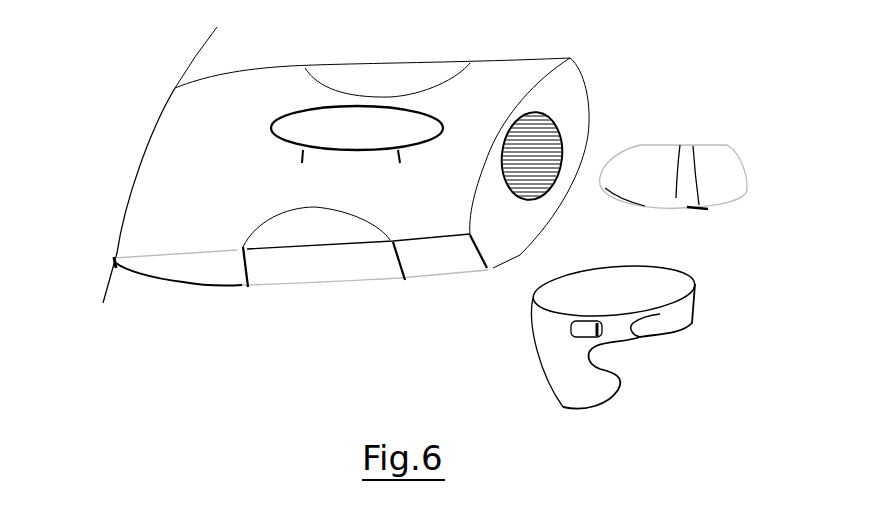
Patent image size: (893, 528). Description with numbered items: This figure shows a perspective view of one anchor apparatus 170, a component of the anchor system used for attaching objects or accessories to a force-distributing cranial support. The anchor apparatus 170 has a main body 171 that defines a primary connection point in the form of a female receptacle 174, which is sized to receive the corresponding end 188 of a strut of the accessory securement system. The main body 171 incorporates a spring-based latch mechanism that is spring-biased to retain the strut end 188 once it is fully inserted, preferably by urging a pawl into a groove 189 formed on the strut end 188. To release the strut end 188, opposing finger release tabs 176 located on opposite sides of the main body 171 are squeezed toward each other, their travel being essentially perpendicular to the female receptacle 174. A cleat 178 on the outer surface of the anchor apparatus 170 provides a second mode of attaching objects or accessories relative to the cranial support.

The anchor apparatus 170 is at (327, 165).
The main body 171 is at (209, 162).
The female receptacle 174 is at (545, 157).
The finger release tabs 176 is at (381, 66).
The cleat 178 is at (371, 134).
The strut end 188 is at (659, 175).
The groove 189 is at (688, 152).